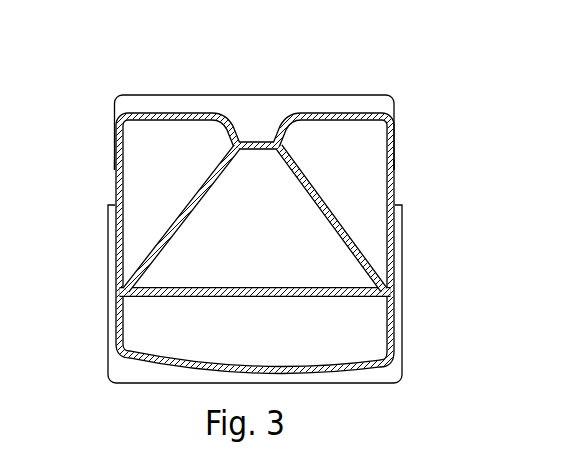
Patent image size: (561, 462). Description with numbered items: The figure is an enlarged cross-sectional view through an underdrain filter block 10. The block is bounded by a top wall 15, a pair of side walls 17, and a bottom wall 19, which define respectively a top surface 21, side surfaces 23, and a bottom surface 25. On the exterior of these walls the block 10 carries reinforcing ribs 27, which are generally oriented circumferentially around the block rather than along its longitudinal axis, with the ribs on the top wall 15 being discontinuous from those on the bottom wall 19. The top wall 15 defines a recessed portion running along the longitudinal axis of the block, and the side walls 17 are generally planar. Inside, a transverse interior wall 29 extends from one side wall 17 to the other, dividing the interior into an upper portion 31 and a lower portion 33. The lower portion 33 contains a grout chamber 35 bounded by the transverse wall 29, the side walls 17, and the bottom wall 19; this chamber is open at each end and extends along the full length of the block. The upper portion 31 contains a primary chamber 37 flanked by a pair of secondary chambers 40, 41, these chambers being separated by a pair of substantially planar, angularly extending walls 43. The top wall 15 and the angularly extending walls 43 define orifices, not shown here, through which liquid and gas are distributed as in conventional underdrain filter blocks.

The underdrain filter block 10 is at (134, 77).
The top wall 15 is at (190, 113).
The side walls 17 is at (116, 163).
The bottom wall 19 is at (365, 374).
The top surface 21 is at (328, 113).
The side surfaces 23 is at (117, 197).
The bottom surface 25 is at (317, 374).
The reinforcing ribs 27 is at (403, 308).
The transverse interior wall 29 is at (165, 300).
The upper portion 31 is at (410, 146).
The lower portion 33 is at (412, 345).
The grout chamber 35 is at (284, 341).
The primary chamber 37 is at (212, 238).
The secondary chamber 40 is at (137, 183).
The secondary chamber 41 is at (338, 186).
The angularly extending walls 43 is at (140, 262).